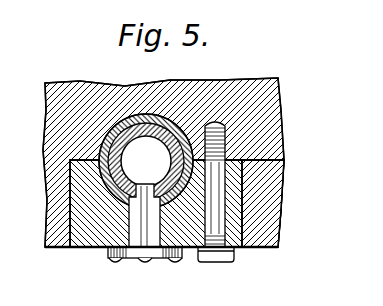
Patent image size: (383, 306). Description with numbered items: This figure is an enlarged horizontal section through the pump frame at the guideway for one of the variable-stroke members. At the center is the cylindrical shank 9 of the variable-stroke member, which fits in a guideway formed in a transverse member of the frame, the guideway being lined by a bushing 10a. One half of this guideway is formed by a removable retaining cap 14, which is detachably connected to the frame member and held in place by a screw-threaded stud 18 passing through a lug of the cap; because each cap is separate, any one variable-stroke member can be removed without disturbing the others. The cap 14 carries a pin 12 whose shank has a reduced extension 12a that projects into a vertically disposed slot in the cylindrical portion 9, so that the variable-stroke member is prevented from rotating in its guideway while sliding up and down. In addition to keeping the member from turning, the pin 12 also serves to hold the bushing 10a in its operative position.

The cylindrical shank 9 is at (126, 126).
The bushing 10a is at (168, 118).
The pin 12 is at (145, 237).
The reduced extension 12a is at (160, 168).
The retaining cap 14 is at (93, 228).
The screw-threaded stud 18 is at (218, 187).